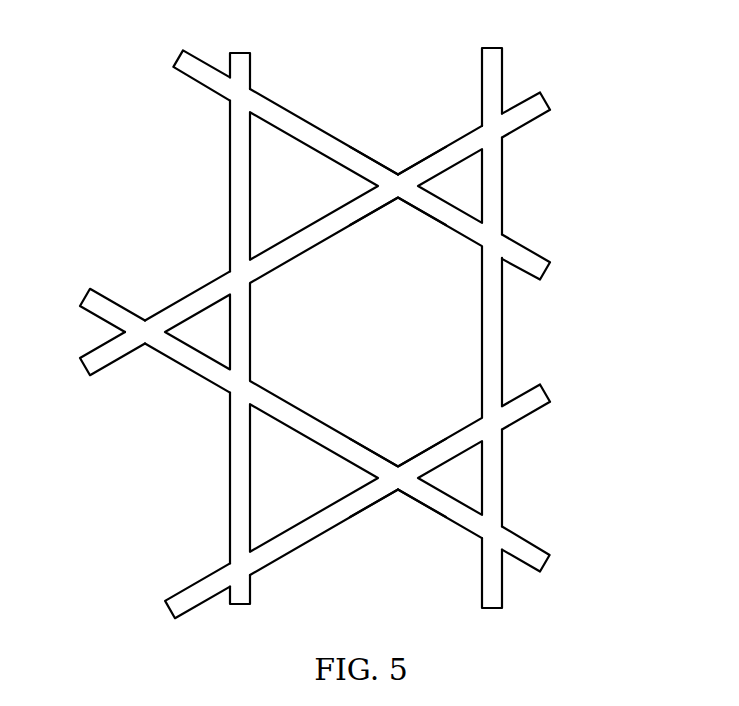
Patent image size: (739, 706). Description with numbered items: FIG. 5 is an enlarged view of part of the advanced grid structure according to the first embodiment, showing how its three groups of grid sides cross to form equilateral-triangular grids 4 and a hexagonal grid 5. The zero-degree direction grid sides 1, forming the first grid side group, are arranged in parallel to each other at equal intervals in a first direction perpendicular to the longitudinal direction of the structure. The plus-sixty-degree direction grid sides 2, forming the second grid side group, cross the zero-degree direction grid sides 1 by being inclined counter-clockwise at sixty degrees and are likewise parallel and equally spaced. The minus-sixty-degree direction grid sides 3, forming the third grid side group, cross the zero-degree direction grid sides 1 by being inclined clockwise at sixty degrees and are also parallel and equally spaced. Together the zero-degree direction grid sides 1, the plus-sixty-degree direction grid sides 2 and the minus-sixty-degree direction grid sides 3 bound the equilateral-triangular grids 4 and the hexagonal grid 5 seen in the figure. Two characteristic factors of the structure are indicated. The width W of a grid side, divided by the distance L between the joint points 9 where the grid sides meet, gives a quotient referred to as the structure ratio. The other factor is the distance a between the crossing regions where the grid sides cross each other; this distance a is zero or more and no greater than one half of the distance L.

The 0-degree direction grid side 1 is at (410, 78).
The +60-degree direction grid side 2 is at (317, 125).
The −60-degree direction grid side 3 is at (96, 364).
The equilateral-triangular grid 4 is at (265, 192).
The hexagonal grid 5 is at (246, 410).
The joint point 9 is at (398, 199).
The width of the grid side W is at (287, 193).
The distance between the crossing regions a is at (232, 296).
The distance between the joint points L is at (387, 186).